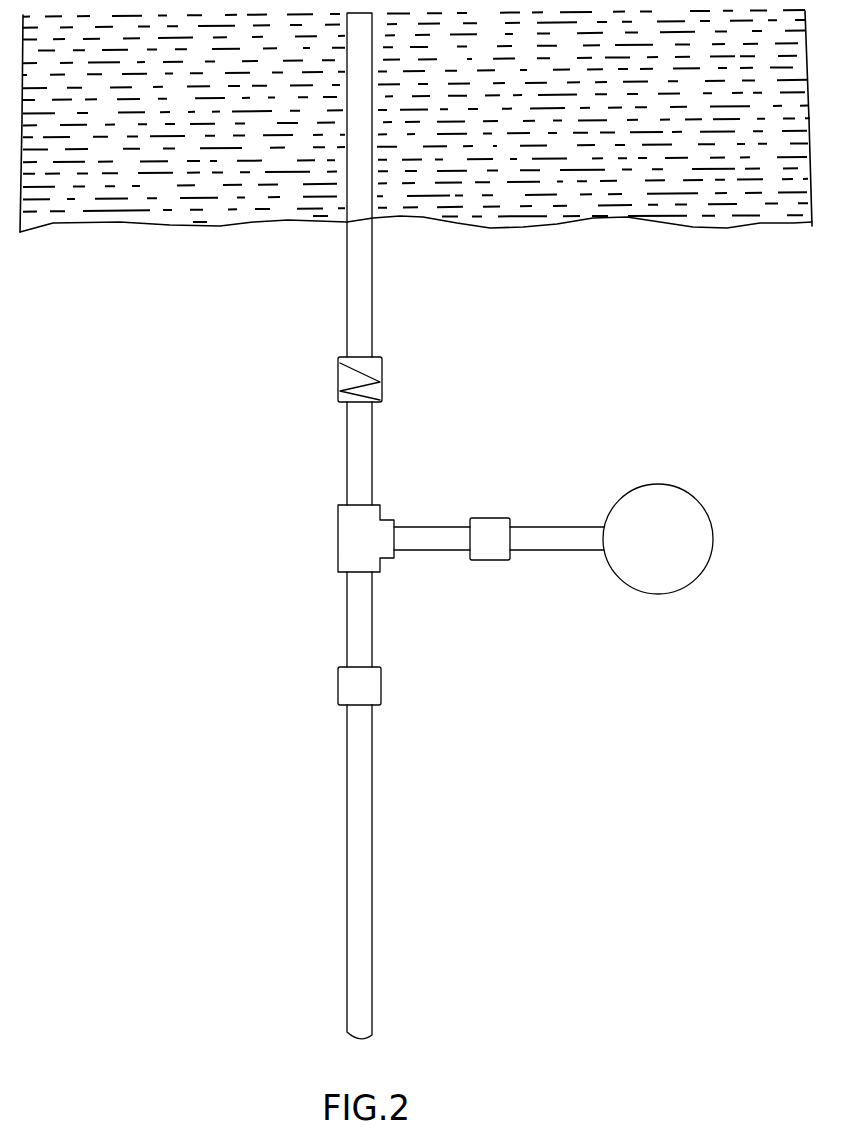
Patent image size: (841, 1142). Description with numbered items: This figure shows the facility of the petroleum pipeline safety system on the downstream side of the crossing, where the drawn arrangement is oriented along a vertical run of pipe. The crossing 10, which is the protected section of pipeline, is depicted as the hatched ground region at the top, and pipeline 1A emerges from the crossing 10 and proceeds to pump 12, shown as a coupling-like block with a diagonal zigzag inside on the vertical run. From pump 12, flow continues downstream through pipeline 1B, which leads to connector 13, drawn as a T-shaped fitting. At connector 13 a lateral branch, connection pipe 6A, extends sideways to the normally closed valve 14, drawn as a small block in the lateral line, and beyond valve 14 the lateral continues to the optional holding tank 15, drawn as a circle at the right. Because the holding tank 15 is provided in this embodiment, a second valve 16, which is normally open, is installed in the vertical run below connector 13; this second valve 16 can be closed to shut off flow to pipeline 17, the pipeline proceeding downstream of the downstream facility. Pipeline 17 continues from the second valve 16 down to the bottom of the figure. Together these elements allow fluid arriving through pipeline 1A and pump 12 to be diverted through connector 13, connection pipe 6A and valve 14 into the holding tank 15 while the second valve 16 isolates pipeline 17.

The crossing 10 is at (182, 214).
The pipeline 1A is at (347, 345).
The pump 12 is at (338, 368).
The pipeline 1B is at (373, 445).
The connector 13 is at (338, 522).
The connection pipe 6A is at (425, 553).
The valve 14 is at (495, 516).
The holding tank 15 is at (685, 577).
The second valve 16 is at (340, 693).
The pipeline 17 is at (350, 830).